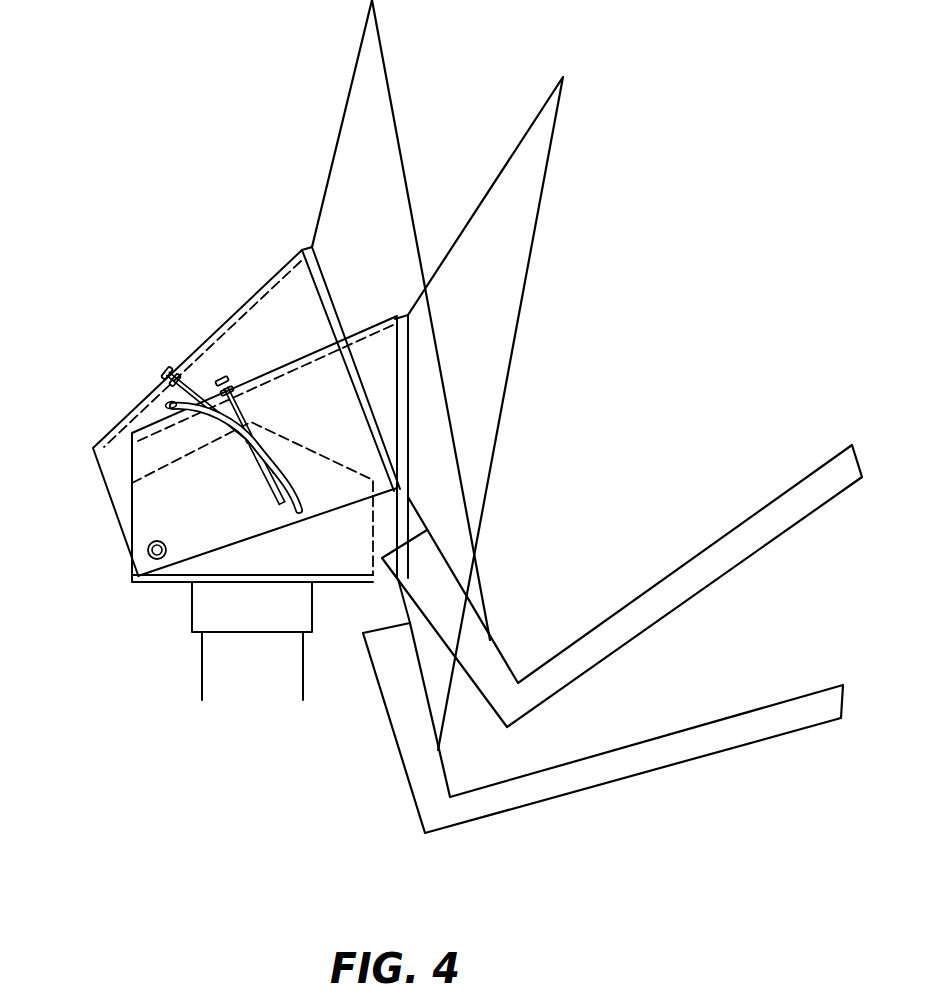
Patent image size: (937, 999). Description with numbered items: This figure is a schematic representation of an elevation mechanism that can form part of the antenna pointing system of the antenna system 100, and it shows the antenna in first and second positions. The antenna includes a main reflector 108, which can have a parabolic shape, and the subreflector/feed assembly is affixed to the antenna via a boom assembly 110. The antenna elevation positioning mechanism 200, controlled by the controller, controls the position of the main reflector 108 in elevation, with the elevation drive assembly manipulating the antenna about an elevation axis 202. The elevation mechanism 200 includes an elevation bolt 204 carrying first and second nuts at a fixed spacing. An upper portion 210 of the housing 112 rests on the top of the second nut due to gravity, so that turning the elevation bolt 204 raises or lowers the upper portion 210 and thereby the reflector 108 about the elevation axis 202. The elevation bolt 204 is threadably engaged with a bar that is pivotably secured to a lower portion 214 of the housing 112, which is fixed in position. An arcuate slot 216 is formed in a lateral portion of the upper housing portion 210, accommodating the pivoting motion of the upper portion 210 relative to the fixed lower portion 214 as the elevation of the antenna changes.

The antenna system 100 is at (206, 194).
The main reflector 108 is at (498, 342).
The boom assembly 110 is at (780, 700).
The housing 112 is at (300, 283).
The antenna elevation positioning mechanism 200 is at (207, 470).
The elevation axis 202 is at (162, 560).
The elevation bolt 204 is at (163, 370).
The upper portion of the housing 210 is at (150, 450).
The lower portion of the housing 214 is at (340, 566).
The arcuate slot 216 is at (288, 485).